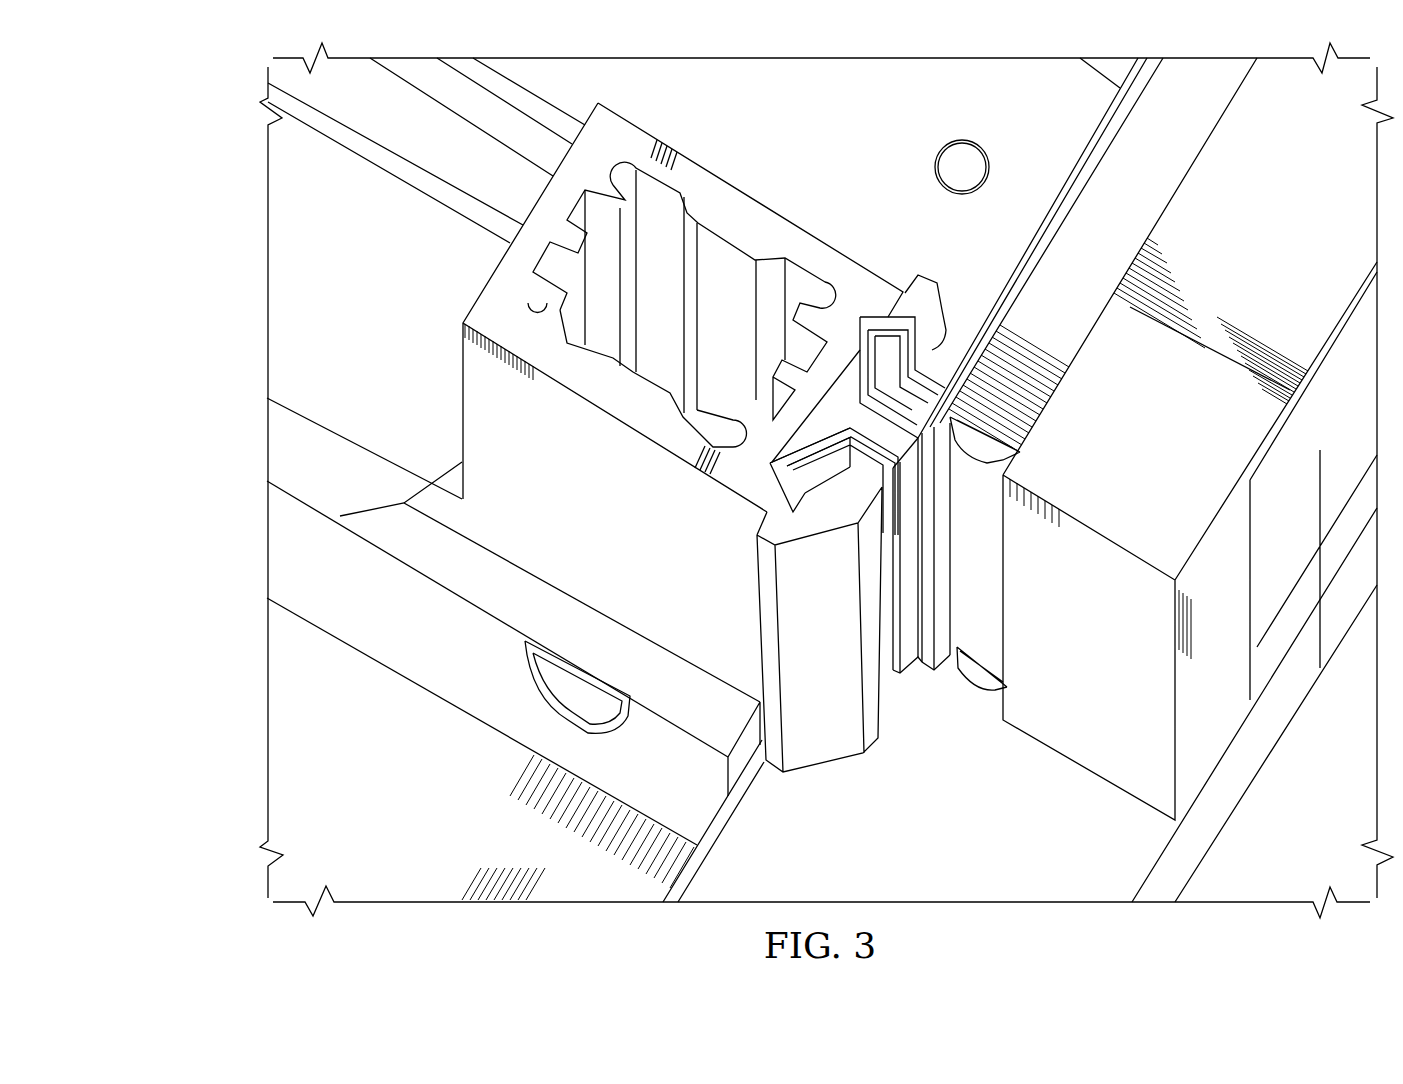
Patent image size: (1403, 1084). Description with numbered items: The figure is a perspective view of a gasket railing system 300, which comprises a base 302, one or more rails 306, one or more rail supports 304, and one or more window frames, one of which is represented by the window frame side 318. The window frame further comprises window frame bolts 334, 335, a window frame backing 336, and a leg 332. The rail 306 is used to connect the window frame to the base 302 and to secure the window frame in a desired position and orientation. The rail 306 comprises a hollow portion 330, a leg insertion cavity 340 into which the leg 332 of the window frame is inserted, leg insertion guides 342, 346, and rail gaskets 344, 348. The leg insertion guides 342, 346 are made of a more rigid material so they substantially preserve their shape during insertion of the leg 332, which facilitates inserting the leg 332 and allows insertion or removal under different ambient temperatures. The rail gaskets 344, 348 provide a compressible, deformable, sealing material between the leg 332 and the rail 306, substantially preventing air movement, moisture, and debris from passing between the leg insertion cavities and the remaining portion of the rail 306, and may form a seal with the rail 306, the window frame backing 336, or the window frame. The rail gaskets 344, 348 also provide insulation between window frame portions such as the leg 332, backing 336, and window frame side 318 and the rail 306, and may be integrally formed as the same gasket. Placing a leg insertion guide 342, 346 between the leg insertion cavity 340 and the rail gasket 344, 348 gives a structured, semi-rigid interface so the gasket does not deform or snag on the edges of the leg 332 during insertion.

The gasket railing system 300 is at (232, 146).
The base 302 is at (898, 844).
The rail support 304 is at (318, 426).
The rail 306 is at (706, 172).
The window frame side 318 is at (1195, 180).
The hollow portion 330 is at (730, 262).
The leg 332 is at (893, 348).
The window frame bolt 334 is at (990, 450).
The window frame bolt 335 is at (977, 686).
The window frame backing 336 is at (1068, 180).
The leg insertion cavity 340 is at (822, 445).
The leg insertion guide 342 is at (882, 315).
The rail gasket 344 is at (843, 372).
The leg insertion guide 346 is at (833, 492).
The rail gasket 348 is at (768, 480).